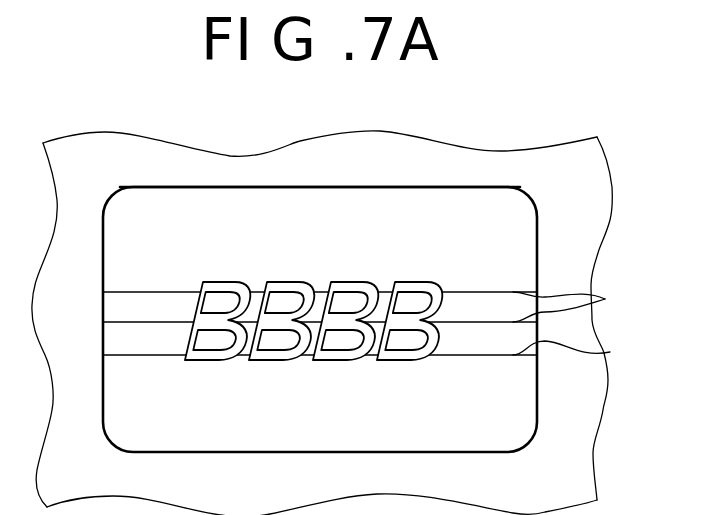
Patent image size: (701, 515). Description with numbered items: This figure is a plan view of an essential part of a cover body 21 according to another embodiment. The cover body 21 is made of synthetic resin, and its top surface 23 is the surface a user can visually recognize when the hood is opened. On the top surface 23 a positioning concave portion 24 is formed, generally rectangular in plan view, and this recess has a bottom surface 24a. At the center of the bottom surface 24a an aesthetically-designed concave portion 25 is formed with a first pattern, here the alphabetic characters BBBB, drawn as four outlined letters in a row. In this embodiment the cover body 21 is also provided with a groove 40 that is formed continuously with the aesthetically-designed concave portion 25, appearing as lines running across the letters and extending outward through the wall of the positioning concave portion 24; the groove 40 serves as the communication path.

The cover body 21 is at (588, 475).
The top surface 23 is at (585, 436).
The positioning concave portion 24 is at (537, 240).
The bottom surface 24a is at (326, 210).
The aesthetically-designed concave portion 25 is at (420, 288).
The groove 40 is at (373, 325).